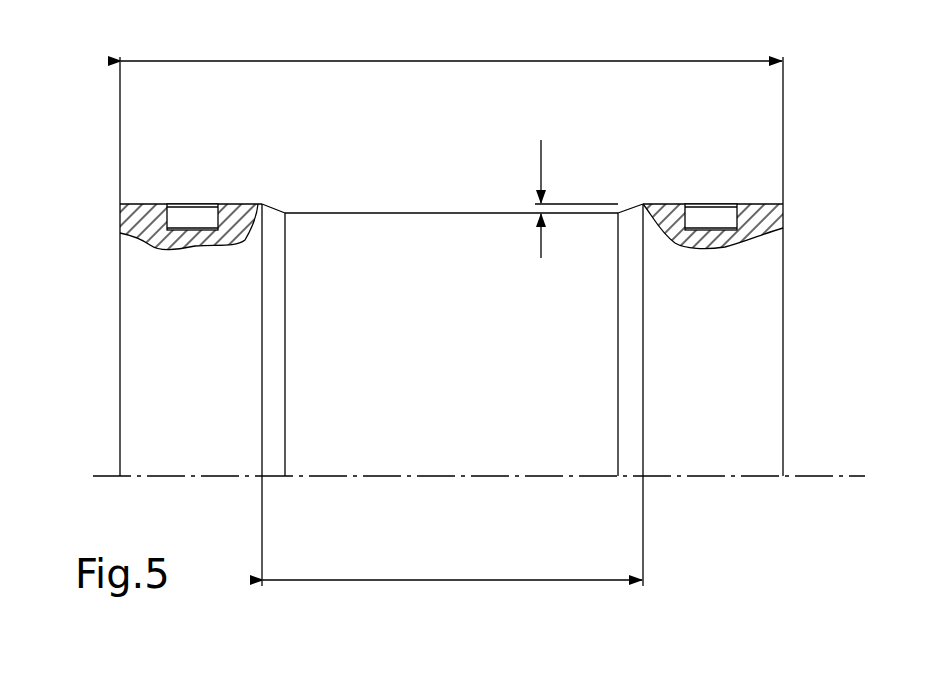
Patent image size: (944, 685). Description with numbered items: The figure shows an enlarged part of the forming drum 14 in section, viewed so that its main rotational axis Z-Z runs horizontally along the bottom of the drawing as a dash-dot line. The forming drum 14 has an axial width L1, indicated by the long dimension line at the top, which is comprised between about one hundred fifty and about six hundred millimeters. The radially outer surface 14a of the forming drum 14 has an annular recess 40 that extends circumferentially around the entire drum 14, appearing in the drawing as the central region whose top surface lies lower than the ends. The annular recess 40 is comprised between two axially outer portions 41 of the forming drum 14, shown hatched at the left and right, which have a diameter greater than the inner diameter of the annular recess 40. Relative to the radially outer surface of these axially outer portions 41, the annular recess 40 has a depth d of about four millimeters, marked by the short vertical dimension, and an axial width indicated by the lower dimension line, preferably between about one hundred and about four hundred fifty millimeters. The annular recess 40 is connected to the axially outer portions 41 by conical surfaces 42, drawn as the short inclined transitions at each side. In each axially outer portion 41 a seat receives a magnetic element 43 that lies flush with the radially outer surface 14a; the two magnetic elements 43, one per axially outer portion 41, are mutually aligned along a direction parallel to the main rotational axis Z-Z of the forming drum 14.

The forming drum 14 is at (449, 198).
The radially outer surface 14a is at (254, 199).
The annular recess 40 is at (390, 213).
The axially outer portions 41 is at (173, 190).
The conical surfaces 42 is at (272, 342).
The magnetic element 43 is at (189, 218).
The axial width L1 is at (455, 61).
The depth d is at (541, 160).
The main rotational axis Z-Z is at (842, 476).